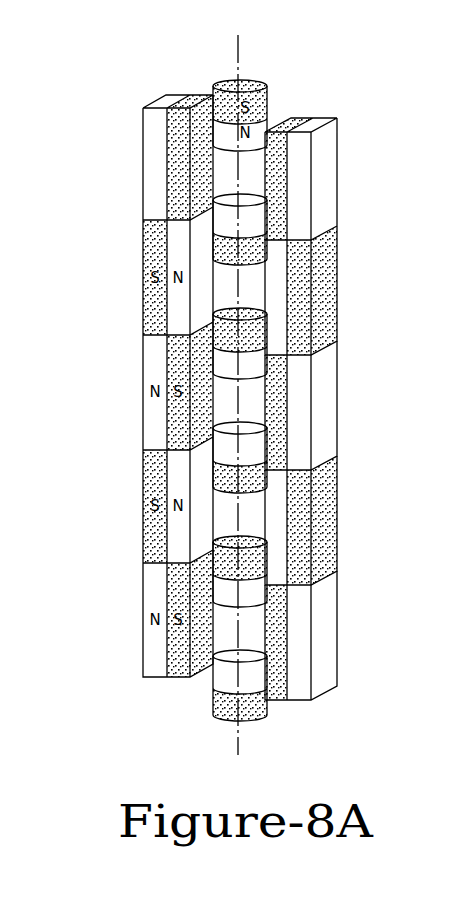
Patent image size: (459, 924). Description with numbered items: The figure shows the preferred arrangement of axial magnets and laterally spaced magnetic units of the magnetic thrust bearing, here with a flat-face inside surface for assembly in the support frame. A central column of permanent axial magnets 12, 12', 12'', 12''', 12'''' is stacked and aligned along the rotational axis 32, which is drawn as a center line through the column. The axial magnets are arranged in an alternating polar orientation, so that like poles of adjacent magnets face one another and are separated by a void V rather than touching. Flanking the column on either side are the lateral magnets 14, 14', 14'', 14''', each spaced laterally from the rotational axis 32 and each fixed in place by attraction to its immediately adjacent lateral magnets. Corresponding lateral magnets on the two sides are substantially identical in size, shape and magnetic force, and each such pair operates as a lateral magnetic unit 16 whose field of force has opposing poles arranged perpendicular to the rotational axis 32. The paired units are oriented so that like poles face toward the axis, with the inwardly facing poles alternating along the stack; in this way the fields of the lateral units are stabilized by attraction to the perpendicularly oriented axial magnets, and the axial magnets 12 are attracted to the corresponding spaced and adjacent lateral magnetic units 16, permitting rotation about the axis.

The axial magnet 12 is at (186, 693).
The axial magnet 12' is at (171, 578).
The axial magnet 12'' is at (171, 465).
The axial magnet 12''' is at (171, 351).
The axial magnet 12'''' is at (171, 237).
The lateral magnet 14 is at (330, 635).
The lateral magnet 14' is at (332, 520).
The lateral magnet 14'' is at (334, 405).
The lateral magnet 14''' is at (337, 290).
The lateral magnetic unit 16 is at (188, 99).
The rotational axis 32 is at (238, 737).
The void V is at (245, 179).